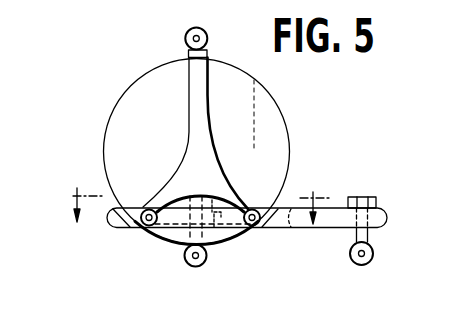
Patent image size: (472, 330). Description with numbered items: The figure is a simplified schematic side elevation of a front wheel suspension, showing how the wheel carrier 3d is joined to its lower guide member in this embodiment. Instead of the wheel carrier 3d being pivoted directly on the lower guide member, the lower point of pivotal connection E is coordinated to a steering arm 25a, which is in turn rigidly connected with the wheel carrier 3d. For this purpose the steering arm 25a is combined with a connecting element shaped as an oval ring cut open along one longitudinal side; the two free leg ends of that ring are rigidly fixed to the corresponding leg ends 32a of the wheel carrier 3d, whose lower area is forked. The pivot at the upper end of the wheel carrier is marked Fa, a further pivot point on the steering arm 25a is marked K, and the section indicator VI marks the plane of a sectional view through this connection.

The upper roller / force application point Fa is at (198, 36).
The wheel carrier 3d is at (208, 111).
The leg ends of the wheel carrier 32a is at (164, 191).
The steering arm 25a is at (332, 208).
The lower point of pivotal connection E is at (196, 258).
The roller K is at (362, 256).
The section line VI- VI is at (193, 219).